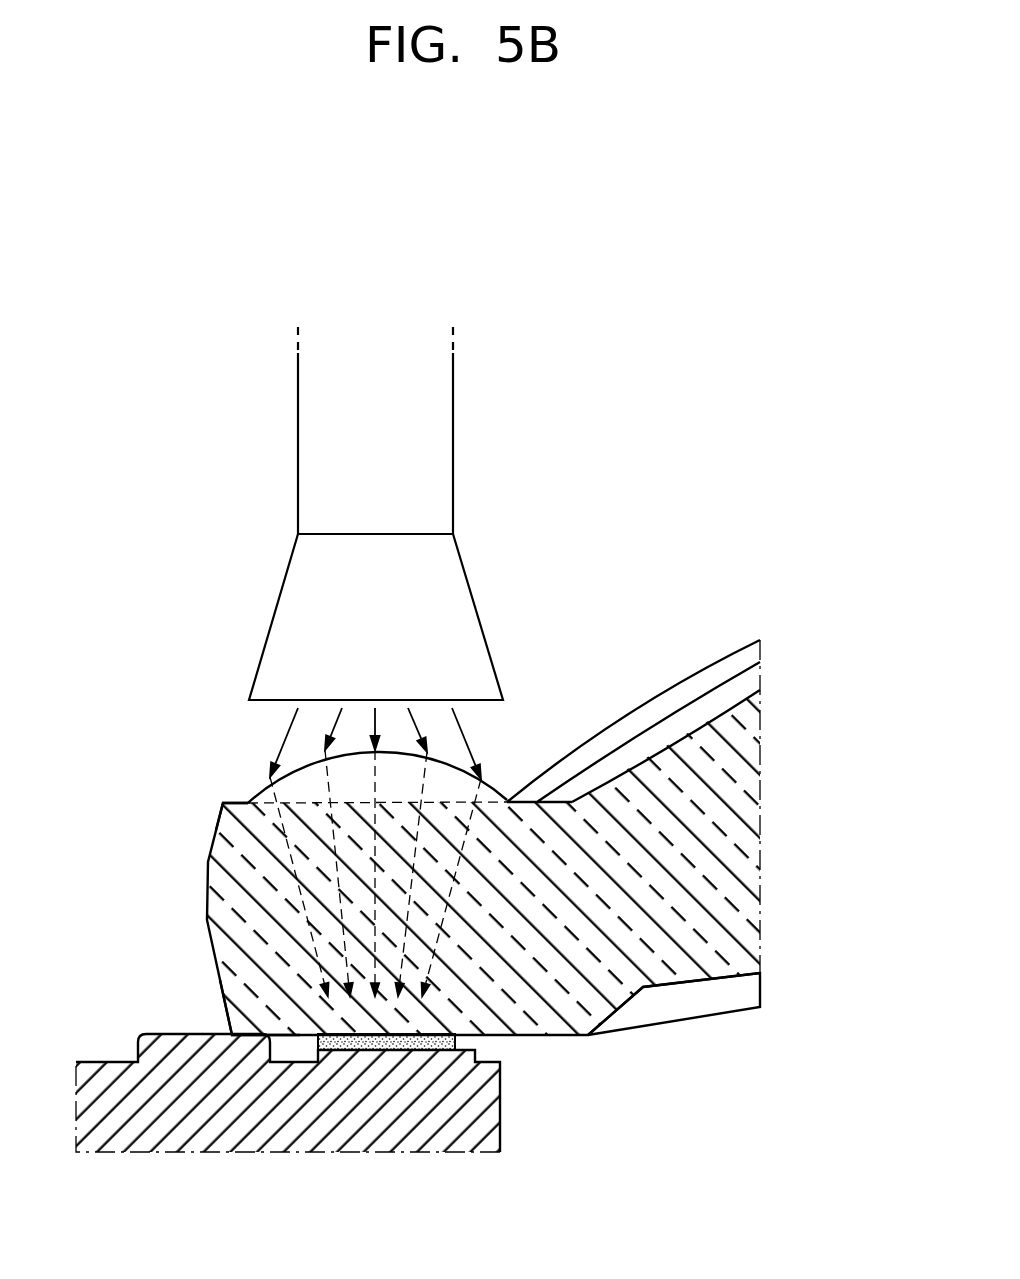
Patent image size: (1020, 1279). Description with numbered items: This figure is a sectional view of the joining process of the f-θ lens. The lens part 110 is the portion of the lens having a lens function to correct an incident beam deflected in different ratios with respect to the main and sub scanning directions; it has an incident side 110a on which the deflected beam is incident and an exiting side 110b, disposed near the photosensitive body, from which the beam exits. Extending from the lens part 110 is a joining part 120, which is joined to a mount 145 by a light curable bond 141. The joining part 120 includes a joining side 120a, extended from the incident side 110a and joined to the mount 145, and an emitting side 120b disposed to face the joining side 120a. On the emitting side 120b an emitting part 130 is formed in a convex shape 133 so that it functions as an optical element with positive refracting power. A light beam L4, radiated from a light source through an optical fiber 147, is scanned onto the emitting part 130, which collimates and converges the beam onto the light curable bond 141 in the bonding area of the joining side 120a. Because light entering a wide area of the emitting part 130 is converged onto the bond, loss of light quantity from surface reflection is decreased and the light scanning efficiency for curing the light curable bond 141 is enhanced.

The optical fiber 147 is at (448, 438).
The light beam L4 is at (414, 715).
The emitting part 130 is at (290, 765).
The convex shape 133 is at (460, 768).
The exiting side 110b is at (676, 730).
The lens part 110 is at (856, 723).
The incident side 110a is at (715, 978).
The emitting side 120b is at (224, 803).
The joining part 120 is at (114, 835).
The joining side 120a is at (282, 1033).
The mount 145 is at (500, 1103).
The light curable bond 141 is at (376, 1050).